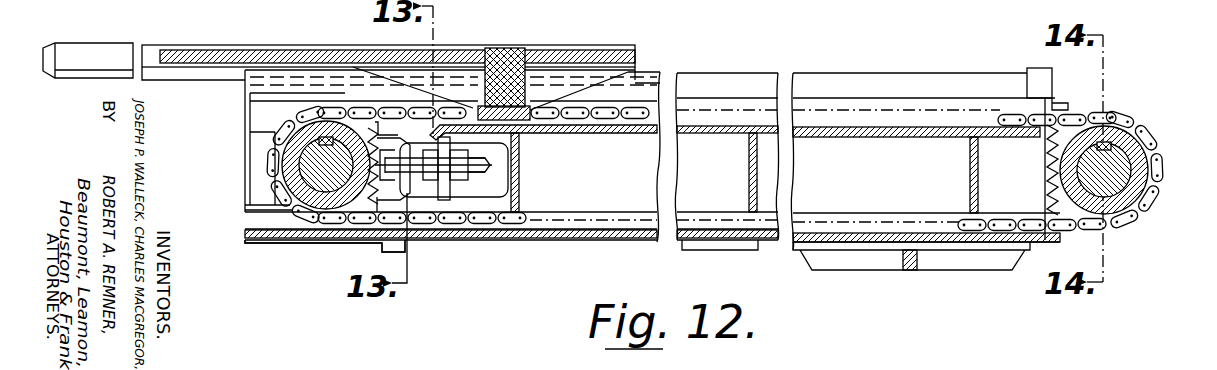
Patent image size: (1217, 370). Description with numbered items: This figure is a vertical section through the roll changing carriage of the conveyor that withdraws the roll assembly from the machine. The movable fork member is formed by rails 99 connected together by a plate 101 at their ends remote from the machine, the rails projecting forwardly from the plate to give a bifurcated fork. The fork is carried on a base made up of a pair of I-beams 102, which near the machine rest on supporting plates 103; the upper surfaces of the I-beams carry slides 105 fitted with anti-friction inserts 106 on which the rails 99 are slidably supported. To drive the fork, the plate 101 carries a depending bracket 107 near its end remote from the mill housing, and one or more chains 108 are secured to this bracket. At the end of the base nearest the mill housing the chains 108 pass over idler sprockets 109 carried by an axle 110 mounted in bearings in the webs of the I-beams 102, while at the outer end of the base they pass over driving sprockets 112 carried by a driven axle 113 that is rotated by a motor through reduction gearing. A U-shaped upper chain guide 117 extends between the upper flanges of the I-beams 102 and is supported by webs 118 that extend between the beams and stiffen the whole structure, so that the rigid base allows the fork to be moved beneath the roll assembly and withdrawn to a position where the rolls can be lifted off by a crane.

The rails 99 is at (84, 50).
The plate 101 is at (200, 55).
The I-beams 102 is at (530, 241).
The supporting plates 103 is at (279, 241).
The slides 105 is at (916, 70).
The anti-friction inserts 106 is at (170, 78).
The depending bracket 107 is at (506, 52).
The chains 108 is at (272, 130).
The idler sprockets 109 is at (273, 161).
The axle 110 is at (302, 176).
The driving sprockets 112 is at (1050, 172).
The driven axle 113 is at (1122, 158).
The upper chain guide 117 is at (895, 130).
The webs 118 is at (519, 175).